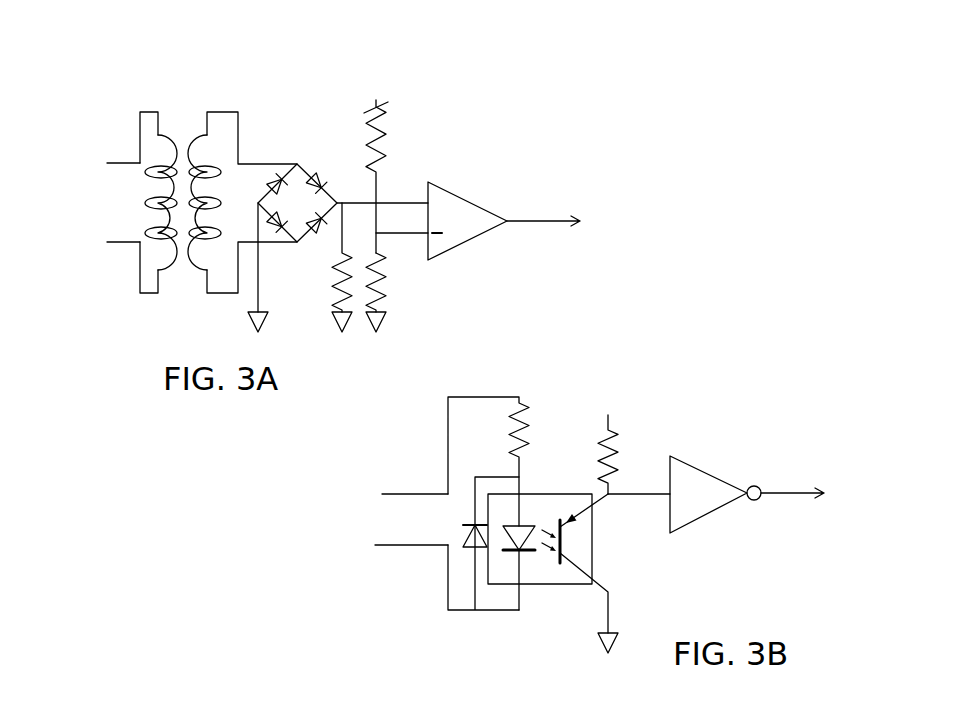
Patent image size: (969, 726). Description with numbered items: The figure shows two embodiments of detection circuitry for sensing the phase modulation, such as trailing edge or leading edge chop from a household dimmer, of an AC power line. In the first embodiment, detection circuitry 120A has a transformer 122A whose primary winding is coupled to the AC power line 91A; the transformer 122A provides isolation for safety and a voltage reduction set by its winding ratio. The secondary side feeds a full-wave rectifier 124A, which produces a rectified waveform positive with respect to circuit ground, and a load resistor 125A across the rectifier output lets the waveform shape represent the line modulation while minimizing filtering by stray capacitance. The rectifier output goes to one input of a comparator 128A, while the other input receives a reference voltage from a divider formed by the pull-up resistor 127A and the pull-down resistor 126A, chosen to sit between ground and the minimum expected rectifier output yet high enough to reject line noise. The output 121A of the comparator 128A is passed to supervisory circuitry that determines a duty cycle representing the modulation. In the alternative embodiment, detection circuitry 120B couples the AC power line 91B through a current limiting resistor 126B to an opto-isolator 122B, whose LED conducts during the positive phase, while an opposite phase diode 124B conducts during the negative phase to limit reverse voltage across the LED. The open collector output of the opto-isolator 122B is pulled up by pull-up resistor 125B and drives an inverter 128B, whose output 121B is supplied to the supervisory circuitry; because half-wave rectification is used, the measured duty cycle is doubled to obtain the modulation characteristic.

In FIG. 3A, the AC power line 91A is at (94, 148).
In FIG. 3A, the detection circuitry 120A is at (511, 110).
In FIG. 3A, the output 121A is at (552, 225).
In FIG. 3A, the transformer 122A is at (198, 97).
In FIG. 3A, the full-wave rectifier 124A is at (307, 146).
In FIG. 3A, the load resistor 125A is at (332, 273).
In FIG. 3A, the pull-down resistor 126A is at (384, 277).
In FIG. 3A, the pull-up resistor 127A is at (378, 141).
In FIG. 3A, the comparator 128A is at (477, 203).
In FIG. 3B, the AC power line 91B is at (394, 485).
In FIG. 3B, the detection circuitry 120B is at (769, 398).
In FIG. 3B, the output 121B is at (795, 497).
In FIG. 3B, the opto-isolator 122B is at (541, 584).
In FIG. 3B, the opposite phase diode 124B is at (467, 538).
In FIG. 3B, the pull-up resistor 125B is at (613, 453).
In FIG. 3B, the current limiting resistor 126B is at (527, 408).
In FIG. 3B, the inverter 128B is at (720, 477).